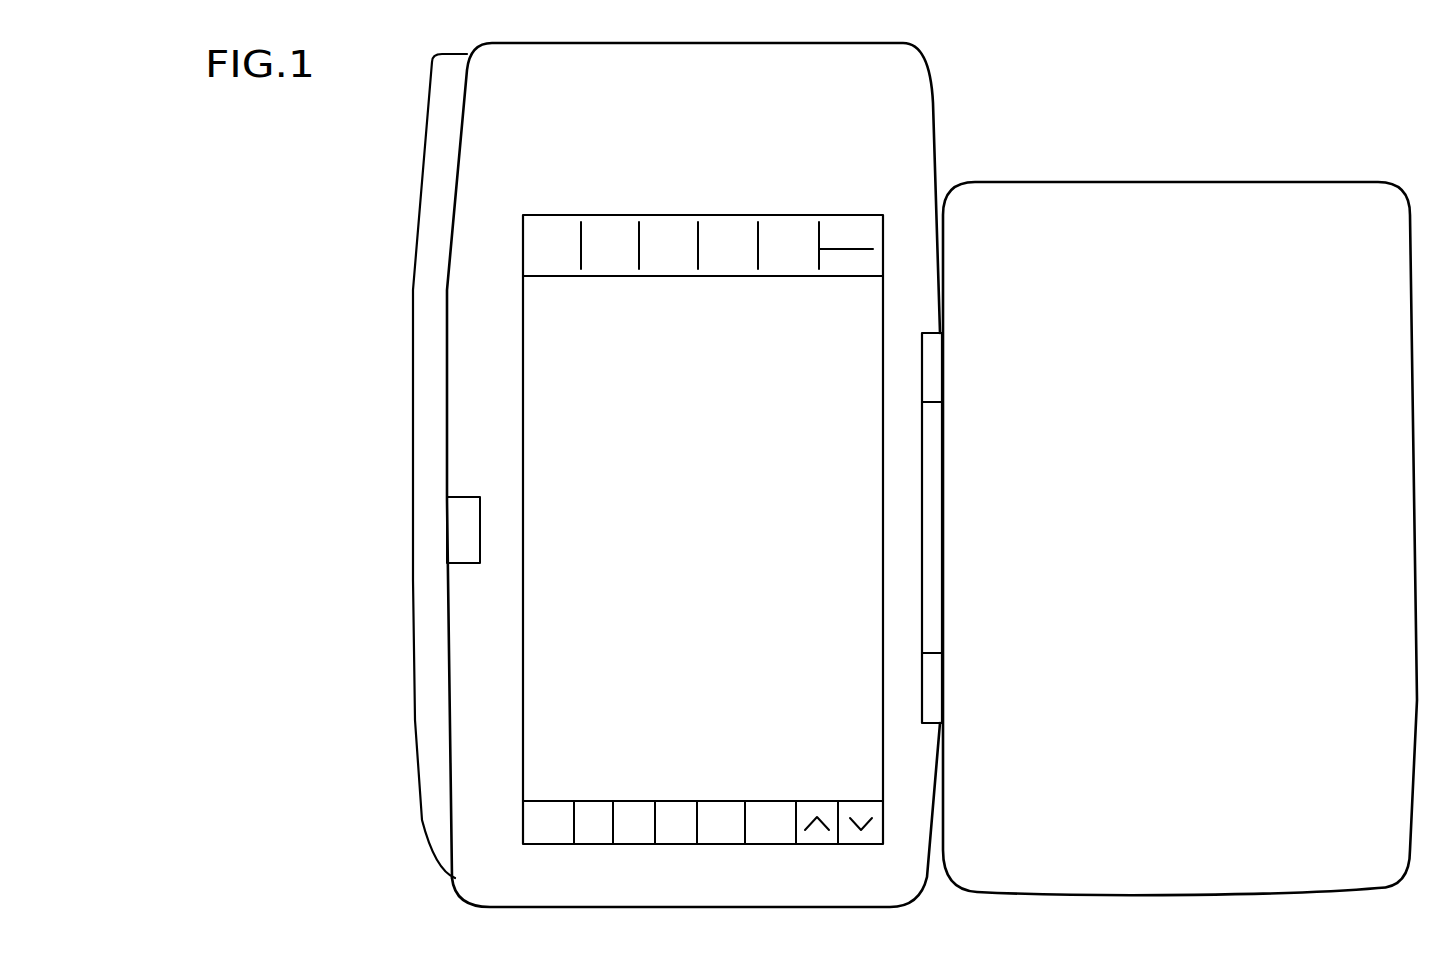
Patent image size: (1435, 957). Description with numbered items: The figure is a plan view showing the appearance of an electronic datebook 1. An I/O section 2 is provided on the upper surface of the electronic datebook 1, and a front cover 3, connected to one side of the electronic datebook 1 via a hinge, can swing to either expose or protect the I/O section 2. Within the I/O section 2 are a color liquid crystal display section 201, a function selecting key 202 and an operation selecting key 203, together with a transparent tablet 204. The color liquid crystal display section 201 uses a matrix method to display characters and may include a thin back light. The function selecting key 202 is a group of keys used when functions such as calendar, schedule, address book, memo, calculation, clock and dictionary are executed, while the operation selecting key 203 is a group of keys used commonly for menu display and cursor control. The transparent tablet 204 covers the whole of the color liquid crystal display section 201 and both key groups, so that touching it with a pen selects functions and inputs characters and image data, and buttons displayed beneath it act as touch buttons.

The electronic datebook 1 is at (963, 83).
The I/O section 2 is at (523, 463).
The front cover 3 is at (1308, 200).
The color liquid crystal display section 201 is at (553, 333).
The function selecting key 202 is at (542, 242).
The operation selecting key 203 is at (592, 832).
The transparent tablet 204 is at (553, 378).